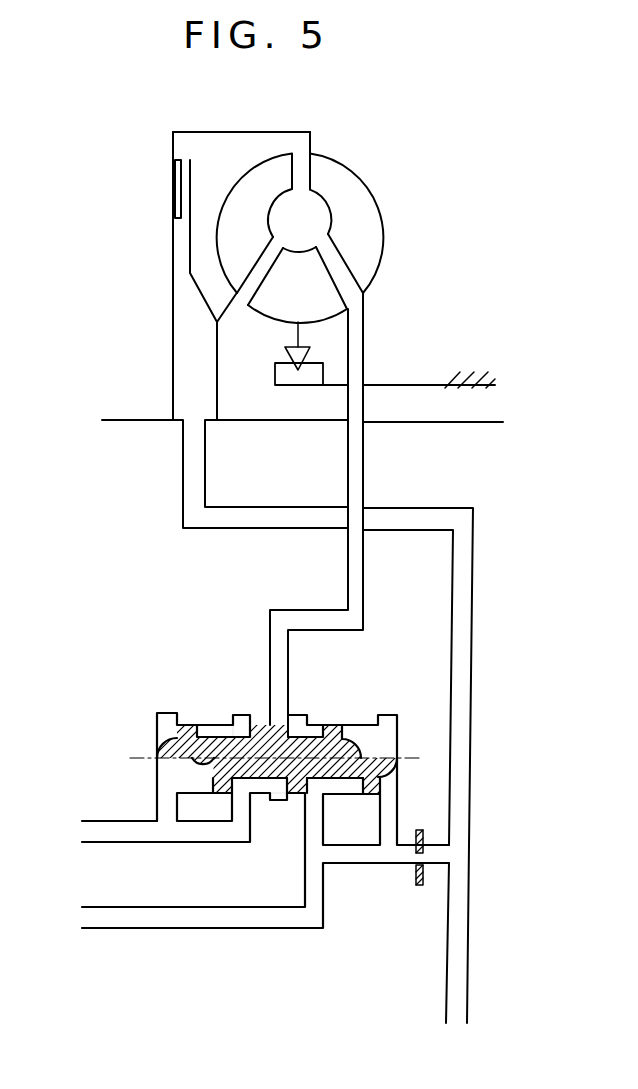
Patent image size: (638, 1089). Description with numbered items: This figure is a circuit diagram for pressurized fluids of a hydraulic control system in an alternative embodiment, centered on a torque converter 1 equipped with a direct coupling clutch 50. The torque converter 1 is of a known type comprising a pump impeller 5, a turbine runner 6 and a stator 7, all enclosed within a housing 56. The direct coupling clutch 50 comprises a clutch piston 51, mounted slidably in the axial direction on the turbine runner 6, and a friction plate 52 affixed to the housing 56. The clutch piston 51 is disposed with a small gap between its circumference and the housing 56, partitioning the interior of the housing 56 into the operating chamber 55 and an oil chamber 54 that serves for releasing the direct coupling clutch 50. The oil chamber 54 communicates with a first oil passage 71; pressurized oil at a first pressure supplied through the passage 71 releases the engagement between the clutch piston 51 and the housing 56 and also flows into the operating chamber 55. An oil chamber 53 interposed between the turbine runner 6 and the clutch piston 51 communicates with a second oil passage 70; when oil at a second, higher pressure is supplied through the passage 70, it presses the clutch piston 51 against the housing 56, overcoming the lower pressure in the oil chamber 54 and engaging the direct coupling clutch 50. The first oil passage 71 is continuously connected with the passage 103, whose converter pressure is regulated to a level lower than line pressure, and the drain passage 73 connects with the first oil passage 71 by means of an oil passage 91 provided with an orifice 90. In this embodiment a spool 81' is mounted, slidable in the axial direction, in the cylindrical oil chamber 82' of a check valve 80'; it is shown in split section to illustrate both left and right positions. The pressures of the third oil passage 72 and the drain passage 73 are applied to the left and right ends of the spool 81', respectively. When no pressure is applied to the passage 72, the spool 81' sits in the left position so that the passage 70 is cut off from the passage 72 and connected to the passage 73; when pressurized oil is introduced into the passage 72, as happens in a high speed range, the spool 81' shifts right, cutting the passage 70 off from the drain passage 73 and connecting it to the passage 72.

The direct coupling clutch 50 is at (80, 223).
The torque converter 1 is at (397, 203).
The pump impeller 5 is at (372, 243).
The turbine runner 6 is at (268, 180).
The stator 7 is at (320, 300).
The operating chamber 55 is at (318, 212).
The clutch piston 51 is at (190, 243).
The friction plate 52 is at (173, 180).
The oil chamber 53 is at (205, 195).
The oil chamber 54 is at (190, 343).
The housing 56 is at (172, 300).
The second oil passage 70 is at (358, 457).
The first oil passage 71 is at (465, 550).
The third oil passage 72 is at (125, 820).
The drain passage 73 is at (148, 914).
The check valve 80' is at (266, 774).
The cylindrical oil chamber 82' is at (226, 699).
The spool 81' is at (274, 830).
The orifice 90 is at (417, 858).
The oil passage 91 is at (437, 852).
The passage 103 is at (453, 947).